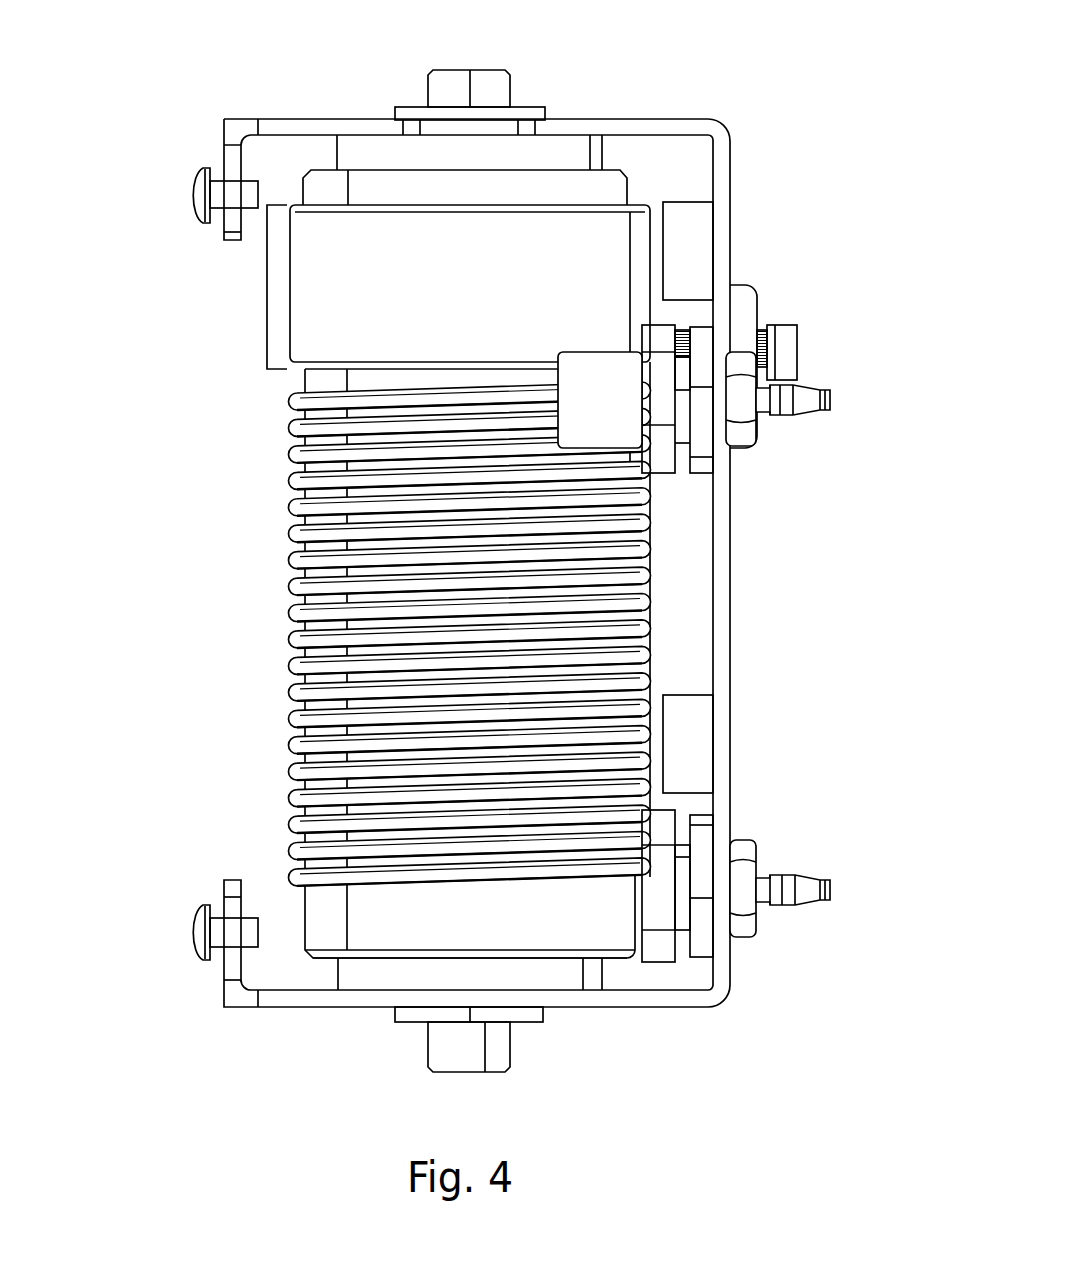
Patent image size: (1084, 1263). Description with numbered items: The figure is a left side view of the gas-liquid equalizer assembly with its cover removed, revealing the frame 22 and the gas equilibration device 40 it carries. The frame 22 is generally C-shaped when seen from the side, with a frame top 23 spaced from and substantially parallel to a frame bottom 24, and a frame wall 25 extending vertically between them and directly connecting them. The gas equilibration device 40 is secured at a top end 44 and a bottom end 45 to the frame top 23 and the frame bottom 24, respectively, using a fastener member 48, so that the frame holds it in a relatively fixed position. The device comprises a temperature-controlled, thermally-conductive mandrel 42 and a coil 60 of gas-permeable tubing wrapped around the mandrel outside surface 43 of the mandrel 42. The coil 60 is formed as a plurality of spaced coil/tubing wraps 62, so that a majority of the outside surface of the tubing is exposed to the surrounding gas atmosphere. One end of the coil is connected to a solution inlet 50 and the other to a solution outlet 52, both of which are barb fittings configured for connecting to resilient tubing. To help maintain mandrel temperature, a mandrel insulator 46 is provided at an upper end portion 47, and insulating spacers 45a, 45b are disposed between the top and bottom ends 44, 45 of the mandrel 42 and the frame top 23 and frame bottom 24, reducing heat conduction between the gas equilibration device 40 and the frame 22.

The frame 22 is at (268, 119).
The frame top 23 is at (575, 120).
The frame bottom 24 is at (613, 1008).
The frame wall 25 is at (735, 598).
The gas equilibration device 40 is at (384, 634).
The mandrel 42 is at (305, 382).
The mandrel outside surface 43 is at (428, 918).
The top end 44 is at (367, 170).
The bottom end 45 is at (363, 958).
The insulating spacer 45a is at (568, 150).
The insulating spacer 45b is at (517, 977).
The mandrel insulator 46 is at (590, 280).
The upper end portion 47 is at (268, 283).
The fastener member 48 is at (462, 70).
The solution inlet 50 is at (832, 887).
The solution outlet 52 is at (830, 400).
The coil 60 is at (288, 648).
The coil/tubing wraps 62 is at (292, 693).